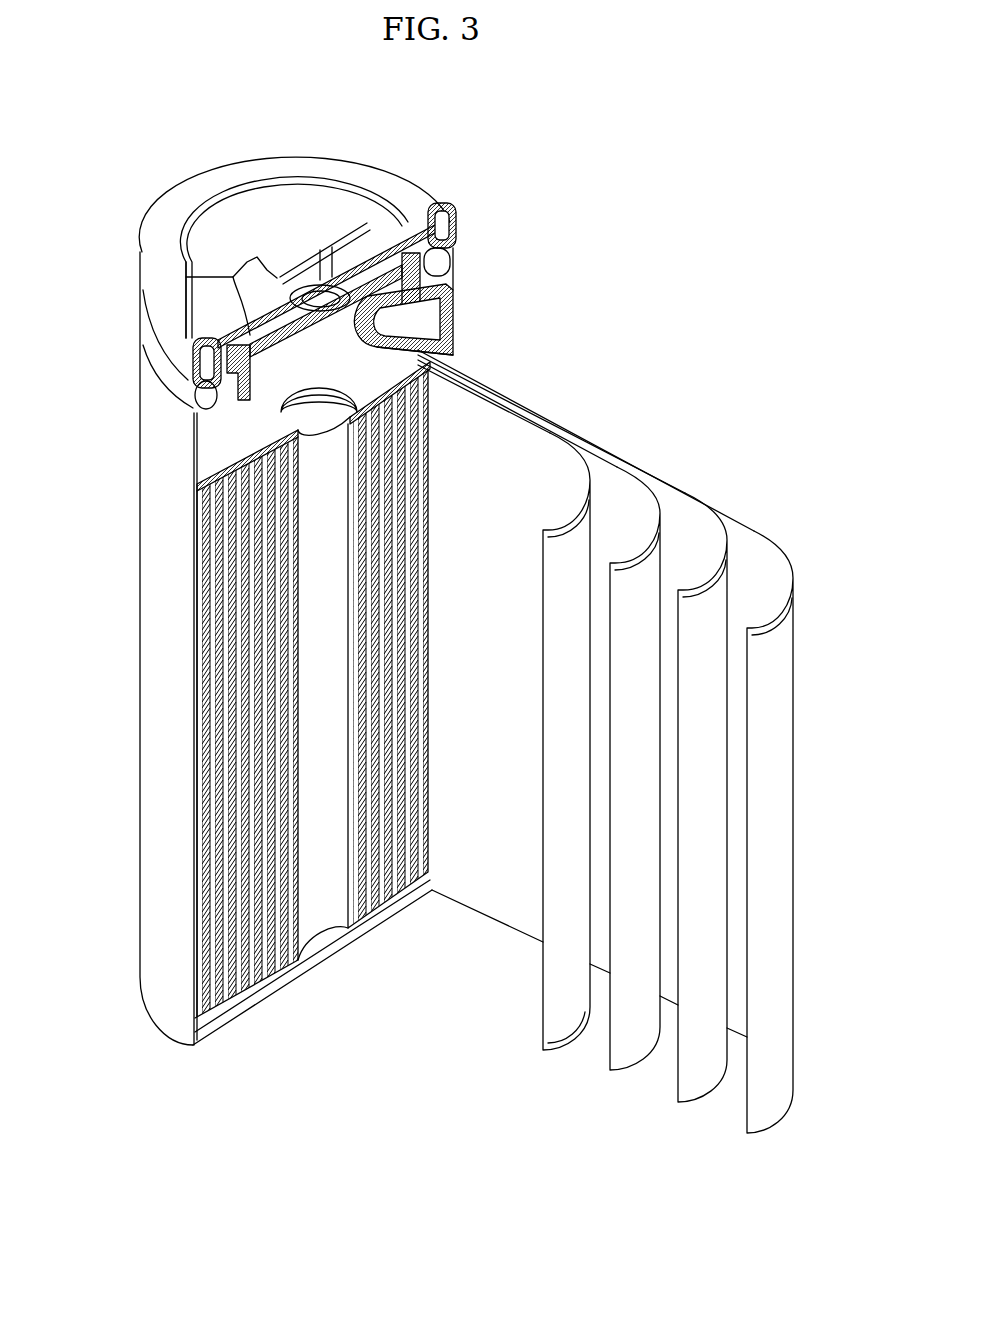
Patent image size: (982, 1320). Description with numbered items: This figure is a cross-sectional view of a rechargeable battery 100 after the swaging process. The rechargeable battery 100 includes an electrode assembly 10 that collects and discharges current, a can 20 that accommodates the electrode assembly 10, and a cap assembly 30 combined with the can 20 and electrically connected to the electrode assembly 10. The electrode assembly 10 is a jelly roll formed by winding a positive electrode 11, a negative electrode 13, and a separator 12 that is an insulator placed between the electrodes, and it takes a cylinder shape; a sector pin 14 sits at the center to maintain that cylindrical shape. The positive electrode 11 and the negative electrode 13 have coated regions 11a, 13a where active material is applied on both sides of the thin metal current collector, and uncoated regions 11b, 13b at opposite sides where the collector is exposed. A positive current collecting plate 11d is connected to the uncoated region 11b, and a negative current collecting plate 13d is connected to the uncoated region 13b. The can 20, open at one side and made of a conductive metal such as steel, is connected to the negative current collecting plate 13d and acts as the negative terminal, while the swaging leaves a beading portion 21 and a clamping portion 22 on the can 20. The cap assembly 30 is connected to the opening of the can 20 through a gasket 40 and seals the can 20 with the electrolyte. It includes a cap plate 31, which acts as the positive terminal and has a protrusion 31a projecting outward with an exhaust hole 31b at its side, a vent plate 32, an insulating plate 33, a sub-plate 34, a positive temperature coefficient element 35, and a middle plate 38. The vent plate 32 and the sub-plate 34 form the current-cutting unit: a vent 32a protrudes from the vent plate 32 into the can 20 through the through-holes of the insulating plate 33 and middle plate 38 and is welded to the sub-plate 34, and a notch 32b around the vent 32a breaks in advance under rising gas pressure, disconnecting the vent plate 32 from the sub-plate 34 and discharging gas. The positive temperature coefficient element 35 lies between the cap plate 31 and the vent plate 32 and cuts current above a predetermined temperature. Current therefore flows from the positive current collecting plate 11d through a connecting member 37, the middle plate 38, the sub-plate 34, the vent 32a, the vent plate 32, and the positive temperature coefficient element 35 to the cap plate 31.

The rechargeable battery 100 is at (606, 117).
The electrode assembly 10 is at (224, 800).
The positive electrode 11 is at (605, 741).
The coated region 11a is at (722, 593).
The uncoated region 11b is at (673, 493).
The positive current collecting plate 11d is at (205, 463).
The separator 12 is at (627, 1052).
The negative electrode 13 is at (504, 764).
The coated region 13a is at (545, 1008).
The uncoated region 13b is at (557, 1042).
The negative current collecting plate 13d is at (252, 990).
The sector pin 14 is at (326, 913).
The can 20 is at (140, 600).
The beading portion 21 is at (192, 394).
The clamping portion 22 is at (182, 358).
The cap assembly 30 is at (325, 201).
The cap plate 31 is at (398, 223).
The protrusion 31a is at (278, 238).
The exhaust hole 31b is at (185, 273).
The vent plate 32 is at (455, 237).
The vent 32a is at (312, 298).
The notch 32b is at (340, 292).
The insulating plate 33 is at (422, 264).
The sub-plate 34 is at (450, 350).
The positive temperature coefficient element 35 is at (450, 223).
The connecting member 37 is at (448, 322).
The middle plate 38 is at (428, 290).
The gasket 40 is at (452, 250).